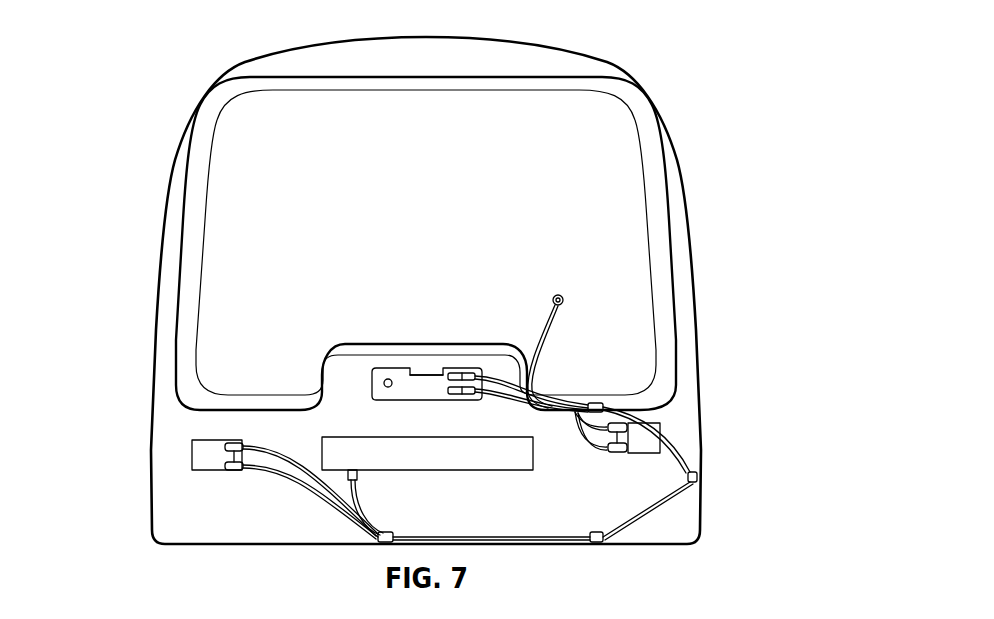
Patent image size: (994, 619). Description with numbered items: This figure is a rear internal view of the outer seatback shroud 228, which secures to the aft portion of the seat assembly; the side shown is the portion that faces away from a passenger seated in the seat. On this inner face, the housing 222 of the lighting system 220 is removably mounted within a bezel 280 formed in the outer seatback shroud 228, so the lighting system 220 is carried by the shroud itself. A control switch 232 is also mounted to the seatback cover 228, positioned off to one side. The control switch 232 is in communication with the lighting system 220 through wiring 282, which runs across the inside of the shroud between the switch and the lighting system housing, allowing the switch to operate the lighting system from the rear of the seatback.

The outer seatback shroud 228 is at (157, 78).
The bezel 280 is at (374, 367).
The housing 222 is at (413, 381).
The lighting system 220 is at (457, 356).
The wiring 282 is at (560, 406).
The control switch 232 is at (672, 434).